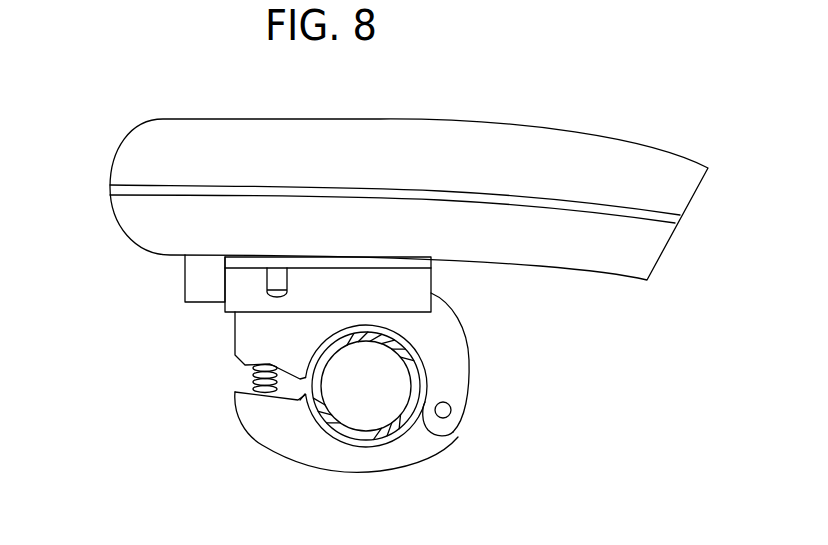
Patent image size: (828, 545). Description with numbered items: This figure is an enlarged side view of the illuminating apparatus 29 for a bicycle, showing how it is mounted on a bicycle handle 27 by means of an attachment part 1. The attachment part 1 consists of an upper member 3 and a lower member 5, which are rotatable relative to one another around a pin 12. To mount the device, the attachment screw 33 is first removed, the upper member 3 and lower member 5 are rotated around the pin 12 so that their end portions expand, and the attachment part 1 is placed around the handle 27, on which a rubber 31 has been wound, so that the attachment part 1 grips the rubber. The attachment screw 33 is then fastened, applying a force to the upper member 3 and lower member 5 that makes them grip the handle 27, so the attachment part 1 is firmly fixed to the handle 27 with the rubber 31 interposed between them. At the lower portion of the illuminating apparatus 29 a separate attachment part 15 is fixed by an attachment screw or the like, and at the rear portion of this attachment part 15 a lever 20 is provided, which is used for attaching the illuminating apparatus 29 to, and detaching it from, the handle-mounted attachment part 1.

The attachment part 1 is at (483, 423).
The upper member 3 is at (450, 338).
The lower member 5 is at (408, 458).
The pin 12 is at (452, 407).
The attachment part 15 is at (245, 300).
The lever 20 is at (200, 277).
The handle 27 is at (410, 388).
The illuminating apparatus 29 is at (547, 148).
The rubber 31 is at (305, 425).
The attachment screw 33 is at (253, 380).